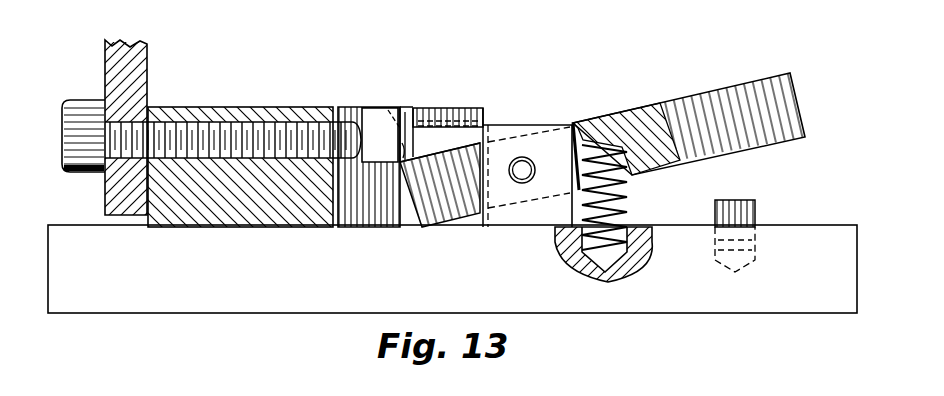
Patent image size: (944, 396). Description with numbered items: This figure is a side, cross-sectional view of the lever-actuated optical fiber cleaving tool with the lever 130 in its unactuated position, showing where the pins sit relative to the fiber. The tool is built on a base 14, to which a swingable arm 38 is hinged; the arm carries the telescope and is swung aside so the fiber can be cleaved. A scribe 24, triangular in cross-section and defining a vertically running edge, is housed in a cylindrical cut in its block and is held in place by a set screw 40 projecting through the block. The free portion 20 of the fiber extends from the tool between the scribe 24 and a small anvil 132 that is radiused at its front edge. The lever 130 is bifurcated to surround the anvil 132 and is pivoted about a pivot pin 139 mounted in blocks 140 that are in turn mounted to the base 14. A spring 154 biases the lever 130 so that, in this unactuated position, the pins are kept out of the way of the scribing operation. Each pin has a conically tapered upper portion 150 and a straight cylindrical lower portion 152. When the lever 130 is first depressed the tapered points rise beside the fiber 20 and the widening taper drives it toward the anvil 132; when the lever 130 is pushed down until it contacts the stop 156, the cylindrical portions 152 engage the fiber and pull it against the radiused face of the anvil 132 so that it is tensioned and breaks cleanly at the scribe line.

The base 14 is at (395, 275).
The swingable arm 38 is at (112, 57).
The set screw 40 is at (188, 130).
The scribe 24 is at (375, 107).
The free portion of the fiber 20 is at (403, 126).
The anvil 132 is at (458, 108).
The conically tapered upper portion 150 is at (405, 152).
The straight cylindrical lower portion 152 is at (408, 152).
The pivot pin 139 is at (527, 166).
The blocks 140 is at (570, 221).
The lever 130 is at (716, 78).
The spring 154 is at (622, 211).
The stop 156 is at (742, 202).